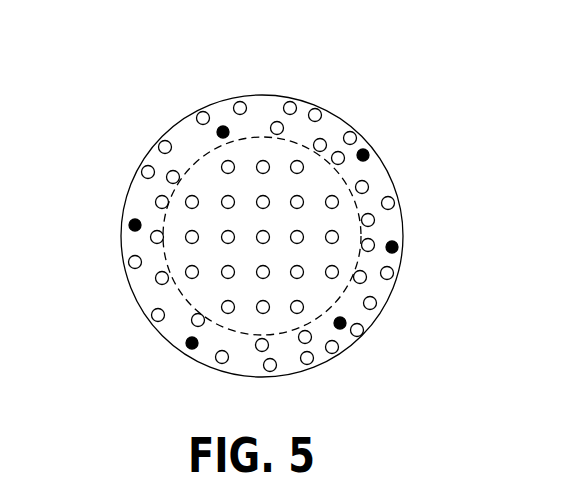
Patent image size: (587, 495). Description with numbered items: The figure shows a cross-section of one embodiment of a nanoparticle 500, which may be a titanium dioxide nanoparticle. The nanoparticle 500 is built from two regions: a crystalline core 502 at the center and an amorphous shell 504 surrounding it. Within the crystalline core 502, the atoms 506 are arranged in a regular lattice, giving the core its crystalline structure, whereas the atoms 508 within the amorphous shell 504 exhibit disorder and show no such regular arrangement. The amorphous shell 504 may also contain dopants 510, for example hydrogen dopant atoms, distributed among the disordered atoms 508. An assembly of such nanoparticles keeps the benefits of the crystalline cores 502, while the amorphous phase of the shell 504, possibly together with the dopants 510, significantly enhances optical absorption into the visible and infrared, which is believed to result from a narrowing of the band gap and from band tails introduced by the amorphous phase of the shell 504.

The nanoparticle 500 is at (130, 88).
The crystalline core 502 is at (322, 145).
The amorphous shell 504 is at (393, 173).
The atoms 506 is at (228, 160).
The atoms 508 is at (396, 200).
The dopants 510 is at (127, 225).